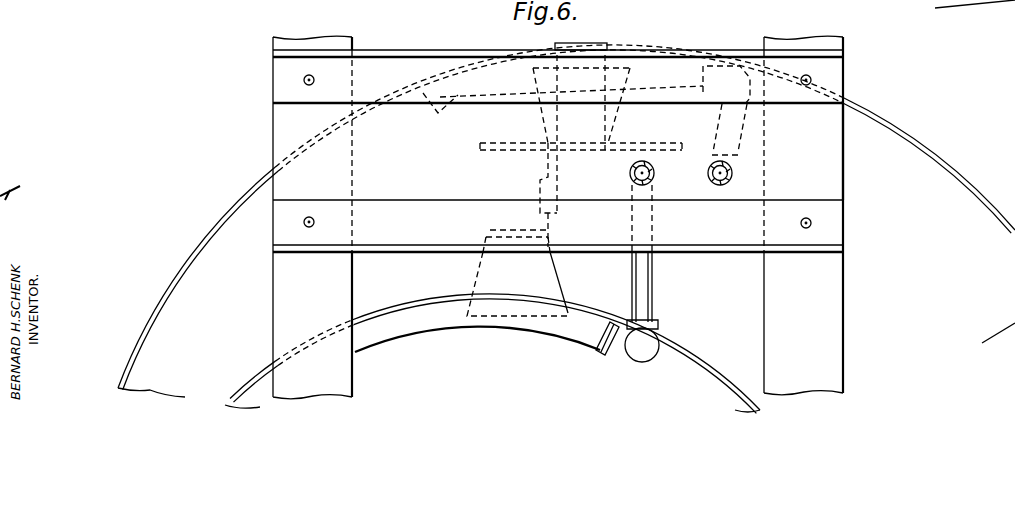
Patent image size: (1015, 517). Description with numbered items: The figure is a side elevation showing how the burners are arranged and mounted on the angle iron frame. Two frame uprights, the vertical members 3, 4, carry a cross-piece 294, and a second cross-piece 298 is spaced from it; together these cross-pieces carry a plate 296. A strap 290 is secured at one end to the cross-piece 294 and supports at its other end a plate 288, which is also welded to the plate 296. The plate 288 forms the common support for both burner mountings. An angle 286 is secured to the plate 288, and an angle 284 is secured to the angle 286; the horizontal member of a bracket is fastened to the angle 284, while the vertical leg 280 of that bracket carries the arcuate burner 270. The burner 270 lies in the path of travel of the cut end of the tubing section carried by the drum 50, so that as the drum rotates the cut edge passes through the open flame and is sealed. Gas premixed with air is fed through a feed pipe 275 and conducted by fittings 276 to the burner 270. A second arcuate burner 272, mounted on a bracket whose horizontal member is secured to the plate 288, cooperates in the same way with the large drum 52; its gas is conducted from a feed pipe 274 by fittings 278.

The vertical member 3 is at (283, 290).
The vertical member 4 is at (836, 297).
The drum 50 is at (711, 370).
The drum 52 is at (998, 216).
The arcuate burner 270 is at (464, 328).
The arcuate burner 272 is at (446, 107).
The feed pipe 274 is at (709, 177).
The feed pipe 275 is at (630, 170).
The fittings 276 is at (652, 278).
The fittings 278 is at (740, 137).
The vertical leg 280 is at (555, 289).
The angle 284 is at (549, 222).
The angle 286 is at (557, 188).
The plate 288 is at (657, 133).
The strap 290 is at (592, 44).
The cross-piece 294 is at (418, 52).
The plate 296 is at (837, 173).
The cross-piece 298 is at (423, 208).